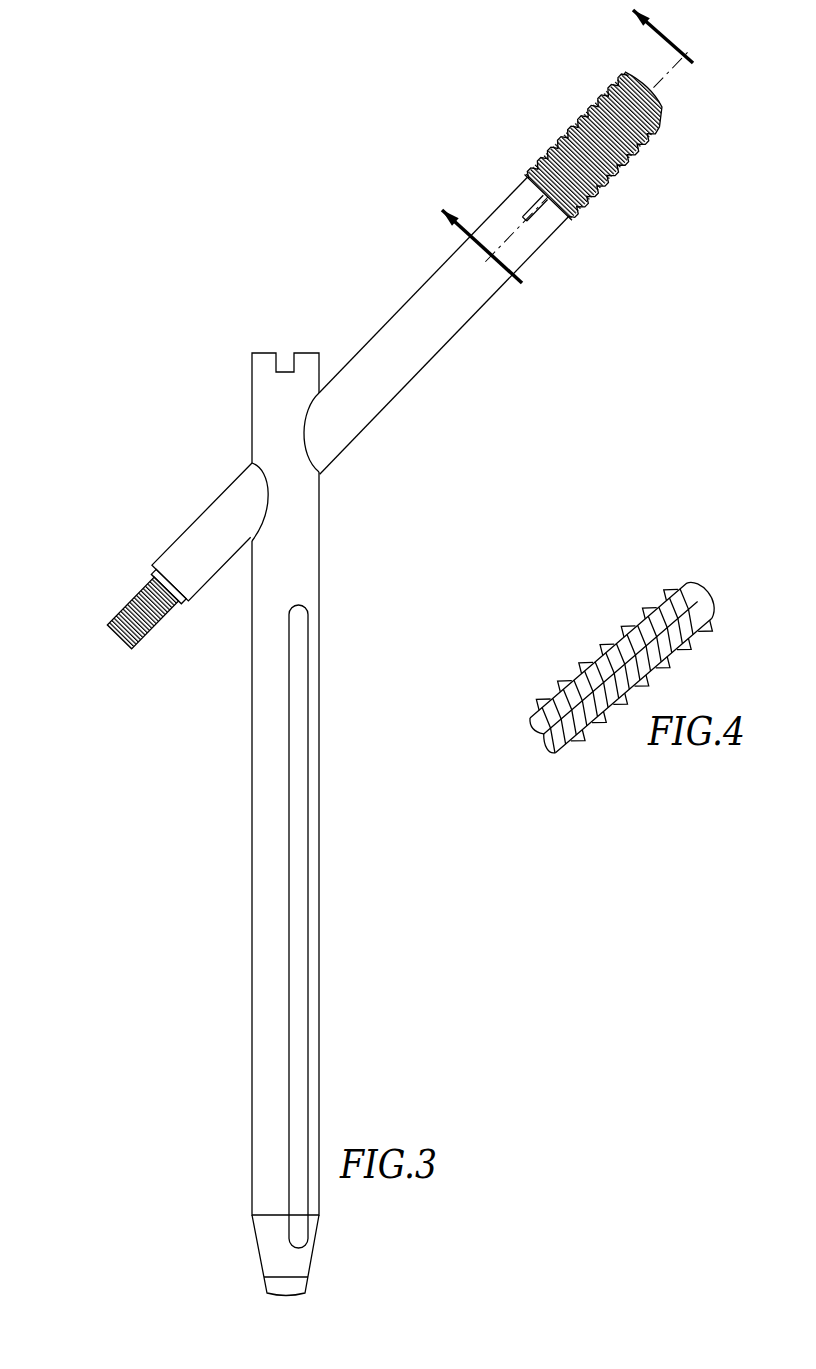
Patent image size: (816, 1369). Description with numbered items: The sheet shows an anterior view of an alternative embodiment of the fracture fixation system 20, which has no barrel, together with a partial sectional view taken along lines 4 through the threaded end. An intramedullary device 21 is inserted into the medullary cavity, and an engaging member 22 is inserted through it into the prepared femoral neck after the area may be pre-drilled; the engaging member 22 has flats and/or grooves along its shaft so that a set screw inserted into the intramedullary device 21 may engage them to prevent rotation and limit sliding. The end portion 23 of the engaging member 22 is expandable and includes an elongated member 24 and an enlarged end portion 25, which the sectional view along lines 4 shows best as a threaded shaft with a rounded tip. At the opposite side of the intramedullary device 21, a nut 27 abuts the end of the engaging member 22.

In FIG. 3, the fracture fixation system 20 is at (257, 313).
In FIG. 3, the intramedullary device 21 is at (318, 717).
In FIG. 3, the engaging member 22 is at (450, 338).
In FIG. 3, the end portion 23 is at (632, 153).
In FIG. 3, the elongated member 24 is at (109, 628).
In FIG. 4, the elongated member 24 is at (600, 714).
In FIG. 4, the enlarged end portion 25 is at (707, 598).
In FIG. 3, the nut 27 is at (153, 575).
In FIG. 3, the section lines 4 is at (576, 162).